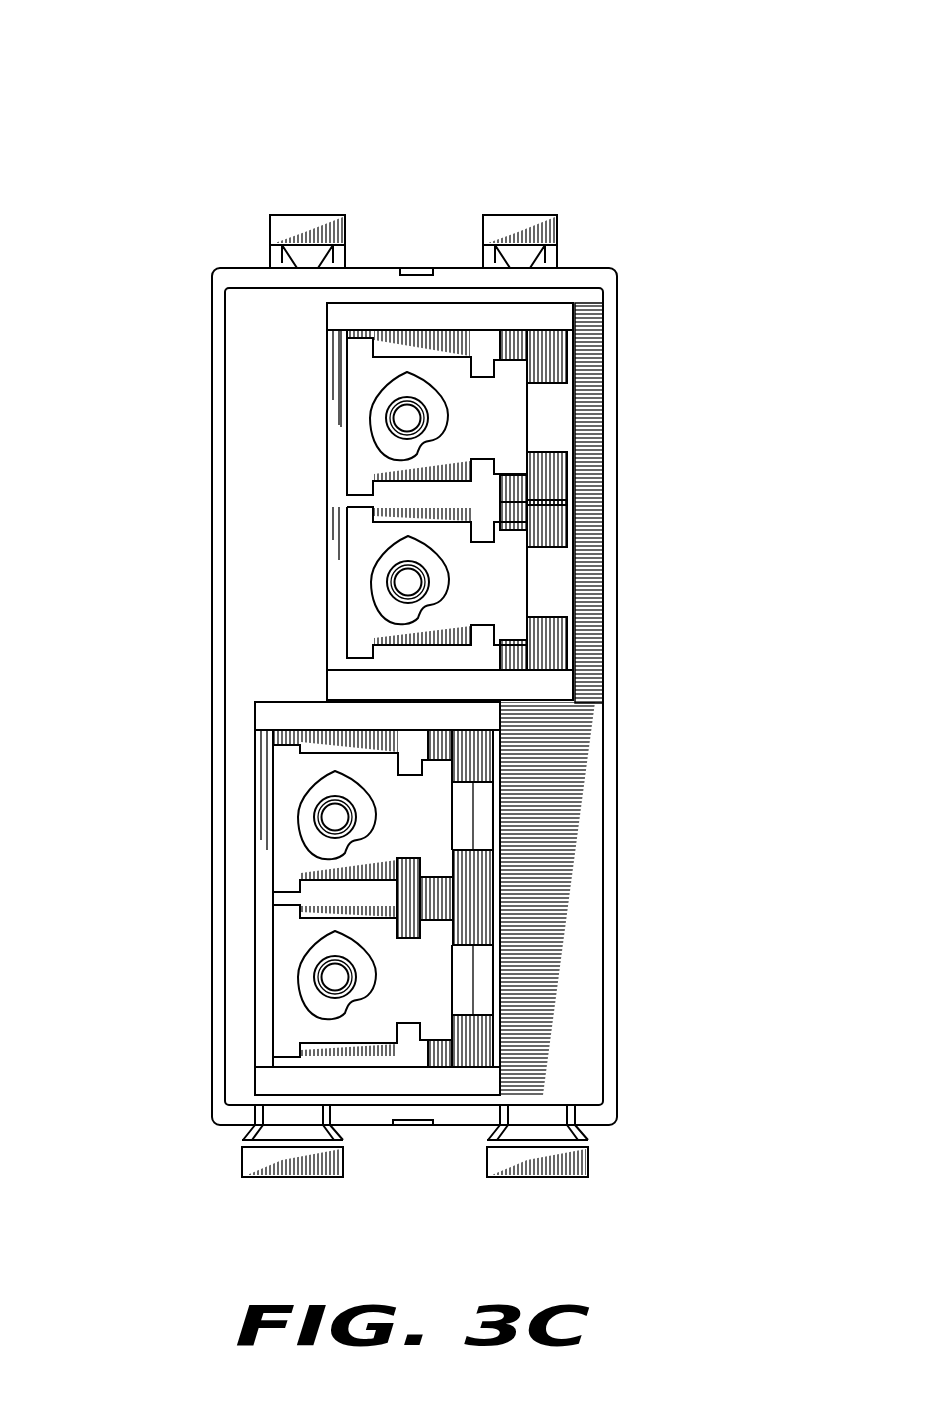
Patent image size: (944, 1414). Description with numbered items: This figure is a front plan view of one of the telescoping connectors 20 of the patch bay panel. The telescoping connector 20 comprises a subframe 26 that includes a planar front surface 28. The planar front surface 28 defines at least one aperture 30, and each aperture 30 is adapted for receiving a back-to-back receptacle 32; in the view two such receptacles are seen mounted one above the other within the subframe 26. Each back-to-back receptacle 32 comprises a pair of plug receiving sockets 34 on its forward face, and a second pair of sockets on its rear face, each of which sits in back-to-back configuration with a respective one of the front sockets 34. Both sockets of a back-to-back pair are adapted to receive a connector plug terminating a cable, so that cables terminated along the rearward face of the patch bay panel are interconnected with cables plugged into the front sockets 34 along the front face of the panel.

The telescoping connector 20 is at (450, 122).
The subframe 26 is at (613, 882).
The planar front surface 28 is at (263, 333).
The aperture 30 is at (507, 843).
The back-to-back receptacle 32 is at (472, 717).
The plug receiving socket 34 is at (360, 540).